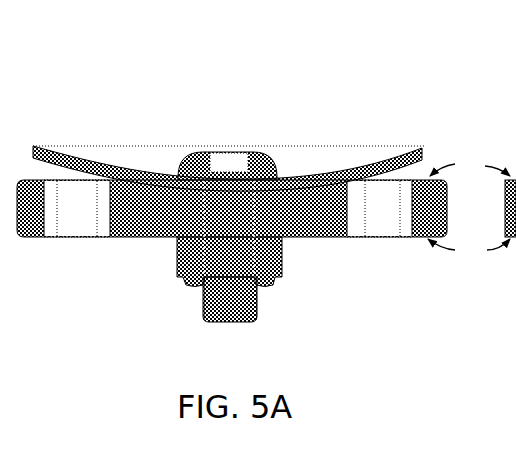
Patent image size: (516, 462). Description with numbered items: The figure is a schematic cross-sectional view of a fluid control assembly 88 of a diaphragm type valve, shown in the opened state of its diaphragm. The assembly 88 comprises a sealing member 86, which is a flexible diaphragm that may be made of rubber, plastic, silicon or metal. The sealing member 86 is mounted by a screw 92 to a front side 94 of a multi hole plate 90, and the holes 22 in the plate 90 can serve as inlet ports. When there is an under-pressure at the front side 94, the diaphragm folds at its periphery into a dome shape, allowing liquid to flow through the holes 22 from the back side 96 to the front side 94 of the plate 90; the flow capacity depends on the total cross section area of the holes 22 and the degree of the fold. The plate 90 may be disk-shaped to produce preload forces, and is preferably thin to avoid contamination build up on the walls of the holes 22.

The fluid control assembly 88 is at (266, 184).
The sealing member 86 is at (385, 163).
The holes 22 is at (70, 220).
The multi hole plate 90 is at (127, 222).
The screw 92 is at (211, 310).
The front side 94 is at (470, 158).
The back side 96 is at (469, 257).